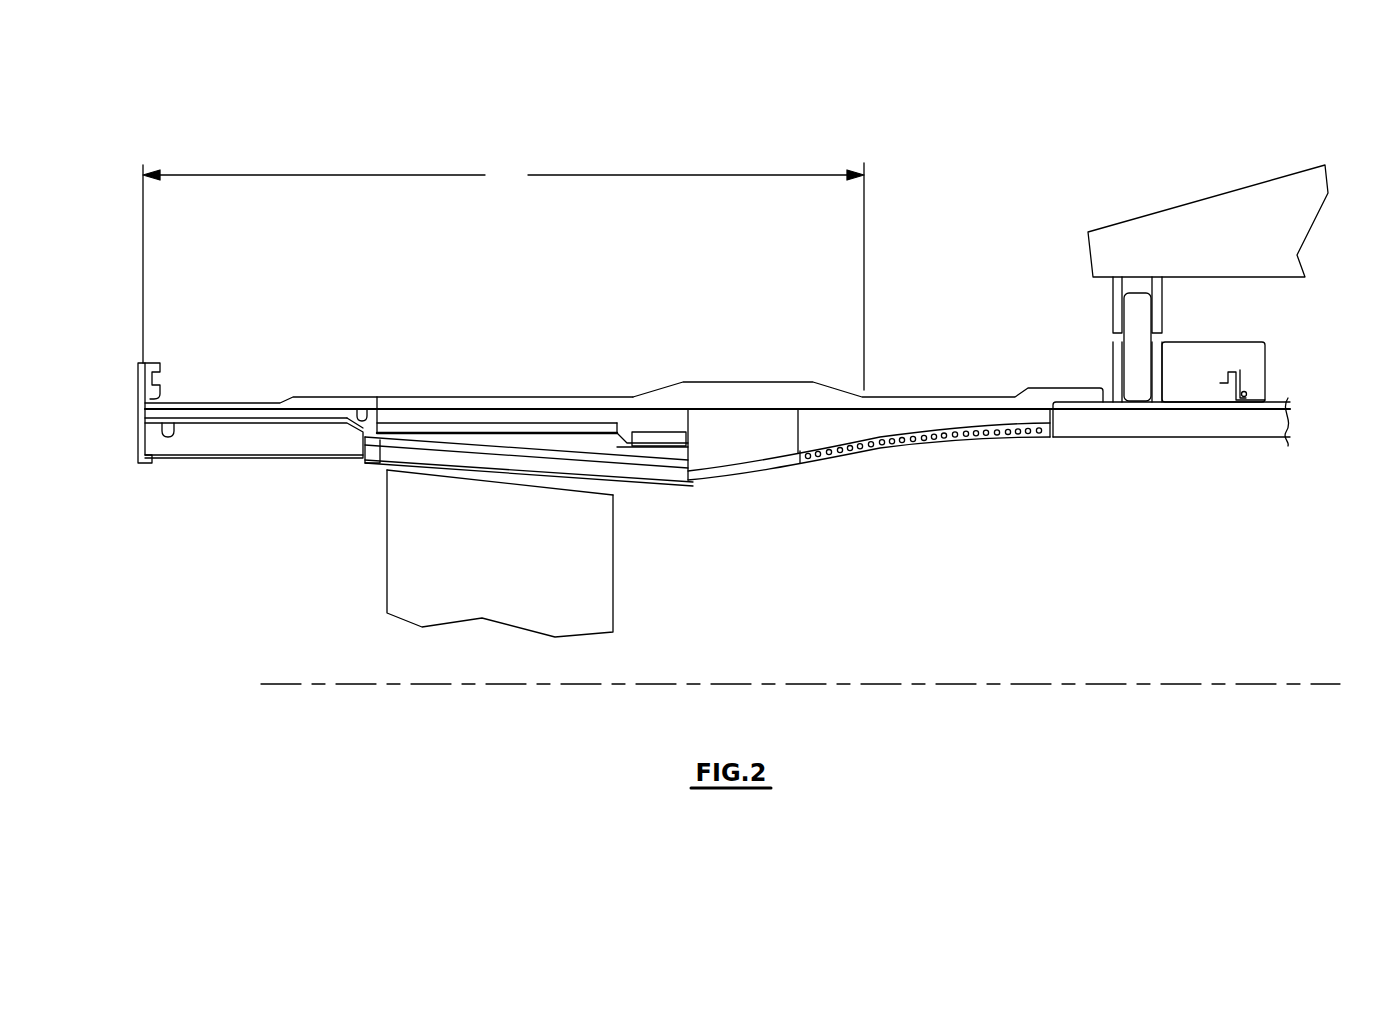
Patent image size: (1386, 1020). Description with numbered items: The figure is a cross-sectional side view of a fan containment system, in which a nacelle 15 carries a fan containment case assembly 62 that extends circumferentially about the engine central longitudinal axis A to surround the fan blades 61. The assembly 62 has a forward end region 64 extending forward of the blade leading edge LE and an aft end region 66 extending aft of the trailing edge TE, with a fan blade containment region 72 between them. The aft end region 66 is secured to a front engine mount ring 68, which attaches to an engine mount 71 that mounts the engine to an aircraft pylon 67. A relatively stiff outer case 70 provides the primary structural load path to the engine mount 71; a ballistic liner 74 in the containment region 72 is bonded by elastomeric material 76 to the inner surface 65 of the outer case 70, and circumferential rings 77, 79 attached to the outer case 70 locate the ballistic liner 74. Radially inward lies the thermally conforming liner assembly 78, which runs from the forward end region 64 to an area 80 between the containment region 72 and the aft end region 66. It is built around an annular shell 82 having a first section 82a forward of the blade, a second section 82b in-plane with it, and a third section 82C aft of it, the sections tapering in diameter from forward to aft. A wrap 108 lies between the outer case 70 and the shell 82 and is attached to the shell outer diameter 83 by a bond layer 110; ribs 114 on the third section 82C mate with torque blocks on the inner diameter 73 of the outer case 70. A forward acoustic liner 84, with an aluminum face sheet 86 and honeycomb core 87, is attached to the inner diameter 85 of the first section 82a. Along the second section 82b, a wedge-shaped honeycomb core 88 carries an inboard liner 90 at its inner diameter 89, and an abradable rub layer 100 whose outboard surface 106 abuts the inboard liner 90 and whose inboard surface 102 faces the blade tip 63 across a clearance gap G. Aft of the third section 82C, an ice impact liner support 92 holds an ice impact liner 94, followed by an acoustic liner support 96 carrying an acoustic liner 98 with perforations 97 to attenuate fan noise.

The nacelle 15 is at (203, 165).
The fan blade 61 is at (570, 565).
The fan containment case assembly 62 is at (265, 200).
The tip 63 is at (603, 490).
The forward end region 64 is at (138, 396).
The inner surface 65 is at (427, 408).
The aft end region 66 is at (1102, 397).
The pylon 67 is at (1313, 232).
The front engine mount ring 68 is at (1175, 412).
The outer case 70 is at (232, 403).
The engine mount 71 is at (1140, 325).
The fan blade containment region 72 is at (503, 276).
The inner diameter 73 is at (373, 408).
The ballistic liner 74 is at (468, 400).
The elastomeric material 76 is at (548, 438).
The circumferential ring 77 is at (285, 403).
The thermally conforming liner assembly 78 is at (275, 520).
The circumferential ring 79 is at (662, 395).
The area 80 is at (684, 519).
The shell 82 is at (280, 403).
The first section 82a is at (295, 405).
The second section 82b is at (486, 440).
The third section 82C is at (684, 430).
The outer diameter 83 is at (488, 420).
The forward acoustic liner 84 is at (222, 458).
The inner diameter 85 is at (174, 423).
The face sheet 86 is at (170, 458).
The honeycomb core 87 is at (305, 435).
The honeycomb core 88 is at (605, 443).
The inner diameter 89 is at (418, 448).
The inboard liner 90 is at (688, 482).
The ice impact liner support 92 is at (714, 468).
The ice impact liner 94 is at (760, 478).
The acoustic liner support 96 is at (830, 445).
The perforations 97 is at (903, 440).
The acoustic liner 98 is at (957, 445).
The abradable rub layer 100 is at (365, 460).
The radially inboard surface 102 is at (372, 475).
The radially outboard surface 106 is at (560, 452).
The wrap 108 is at (612, 440).
The bond layer 110 is at (432, 405).
The rib 114 is at (700, 420).
The engine central longitudinal axis A is at (1340, 684).
The clearance gap G is at (533, 480).
The leading edge LE is at (387, 573).
The trailing edge TE is at (614, 622).